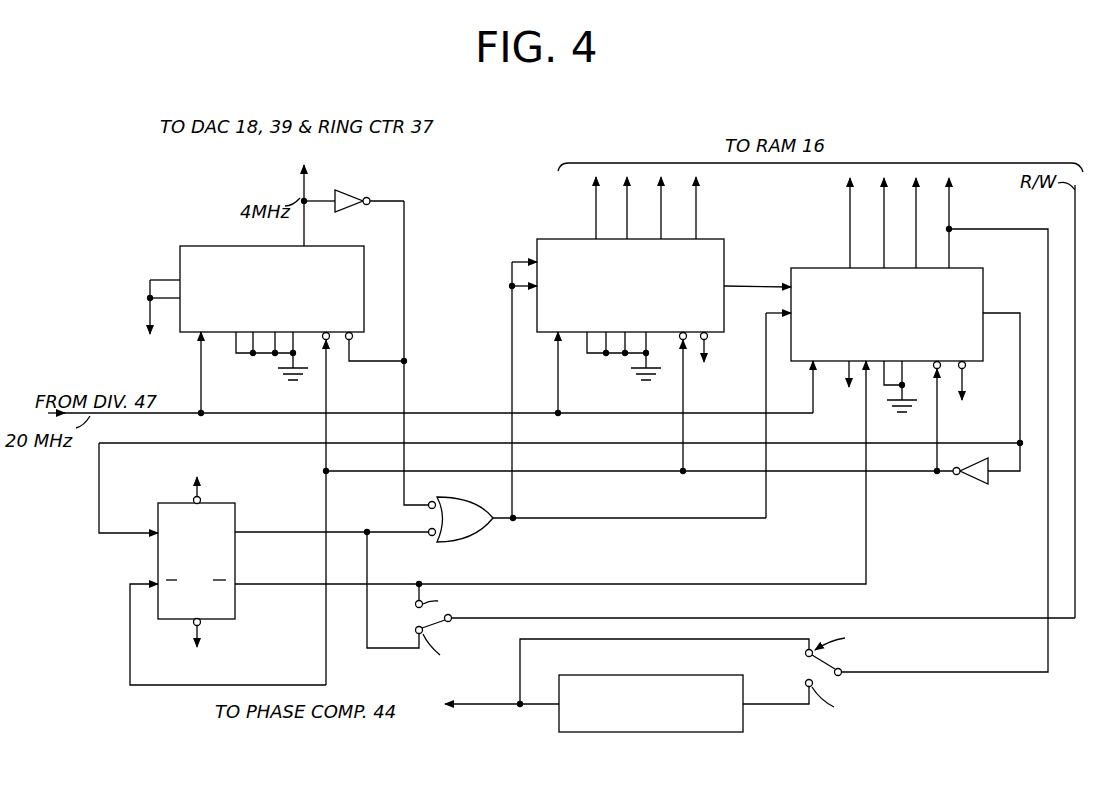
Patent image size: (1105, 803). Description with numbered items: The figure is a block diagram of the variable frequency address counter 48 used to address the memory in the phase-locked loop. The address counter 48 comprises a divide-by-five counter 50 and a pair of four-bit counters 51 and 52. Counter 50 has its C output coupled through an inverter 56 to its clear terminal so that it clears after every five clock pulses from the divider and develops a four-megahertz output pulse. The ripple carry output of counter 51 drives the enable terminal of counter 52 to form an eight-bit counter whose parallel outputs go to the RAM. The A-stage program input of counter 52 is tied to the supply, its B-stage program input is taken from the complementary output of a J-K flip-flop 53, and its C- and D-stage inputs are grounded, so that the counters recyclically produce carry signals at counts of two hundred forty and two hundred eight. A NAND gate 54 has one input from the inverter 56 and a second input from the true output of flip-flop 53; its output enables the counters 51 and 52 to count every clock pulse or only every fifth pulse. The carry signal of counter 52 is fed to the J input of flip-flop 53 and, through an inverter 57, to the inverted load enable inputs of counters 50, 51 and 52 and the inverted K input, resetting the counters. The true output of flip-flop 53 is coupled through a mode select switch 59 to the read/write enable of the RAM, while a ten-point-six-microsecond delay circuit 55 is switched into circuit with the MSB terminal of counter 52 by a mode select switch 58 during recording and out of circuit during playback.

The variable frequency address counter 48 is at (84, 243).
The divide-by-5 counter 50 is at (201, 246).
The 4-bit counter 51 is at (548, 239).
The 4-bit counter 52 is at (812, 268).
The J-K flip-flop 53 is at (235, 512).
The NAND gate 54 is at (484, 533).
The 10.6-microsecond delay circuit 55 is at (640, 675).
The inverter 56 is at (366, 196).
The inverter 57 is at (974, 482).
The mode select switch 58 is at (826, 664).
The mode select switch 59 is at (405, 625).